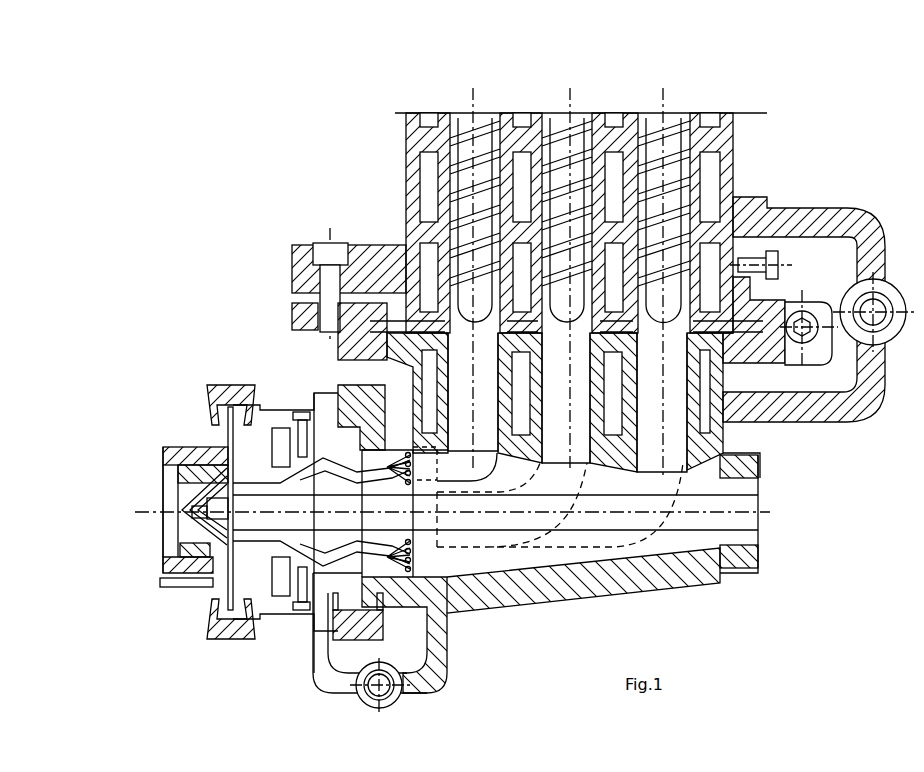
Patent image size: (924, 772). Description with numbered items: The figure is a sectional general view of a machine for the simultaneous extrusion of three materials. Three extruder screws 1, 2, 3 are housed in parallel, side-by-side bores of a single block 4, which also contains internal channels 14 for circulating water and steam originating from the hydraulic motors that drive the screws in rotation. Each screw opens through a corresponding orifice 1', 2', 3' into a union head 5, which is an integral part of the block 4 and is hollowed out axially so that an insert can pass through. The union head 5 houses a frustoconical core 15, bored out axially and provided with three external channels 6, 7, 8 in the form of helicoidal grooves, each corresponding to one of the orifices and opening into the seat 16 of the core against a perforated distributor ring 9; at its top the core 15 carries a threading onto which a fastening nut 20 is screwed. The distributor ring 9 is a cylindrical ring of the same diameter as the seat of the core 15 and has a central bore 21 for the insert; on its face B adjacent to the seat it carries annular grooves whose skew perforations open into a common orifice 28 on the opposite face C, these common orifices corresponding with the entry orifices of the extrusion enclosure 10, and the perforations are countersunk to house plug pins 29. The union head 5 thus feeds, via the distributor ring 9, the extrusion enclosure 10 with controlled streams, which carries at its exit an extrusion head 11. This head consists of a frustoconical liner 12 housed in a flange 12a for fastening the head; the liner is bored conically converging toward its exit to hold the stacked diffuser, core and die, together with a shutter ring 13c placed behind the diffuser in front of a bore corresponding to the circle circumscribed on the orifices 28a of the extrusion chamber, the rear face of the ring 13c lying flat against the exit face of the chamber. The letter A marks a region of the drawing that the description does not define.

The extruder screw 1 is at (475, 219).
The extruder screw 2 is at (567, 219).
The extruder screw 3 is at (664, 220).
The orifice 1' is at (473, 392).
The orifice 2' is at (566, 398).
The orifice 3' is at (662, 402).
The block 4 is at (742, 143).
The union head 5 is at (657, 592).
The channel 6 is at (467, 467).
The channel 7 is at (502, 477).
The channel 8 is at (560, 505).
The perforated distributor ring 9 is at (405, 509).
The extrusion enclosure 10 is at (297, 404).
The extrusion head 11 is at (157, 492).
The frustoconical liner 12 is at (167, 452).
The flange 12a is at (198, 588).
The shutter ring 13c is at (227, 458).
The internal channels 14 is at (569, 274).
The frustoconical core 15 is at (548, 560).
The seat 16 is at (425, 463).
The fastening nut 20 is at (740, 567).
The central bore 21 is at (495, 512).
The common orifice 28 is at (388, 380).
The orifices of the extrusion chamber 28a is at (260, 477).
The plug pins 29 is at (255, 545).
The seal A is at (408, 584).
The face B is at (418, 558).
The face C is at (356, 583).